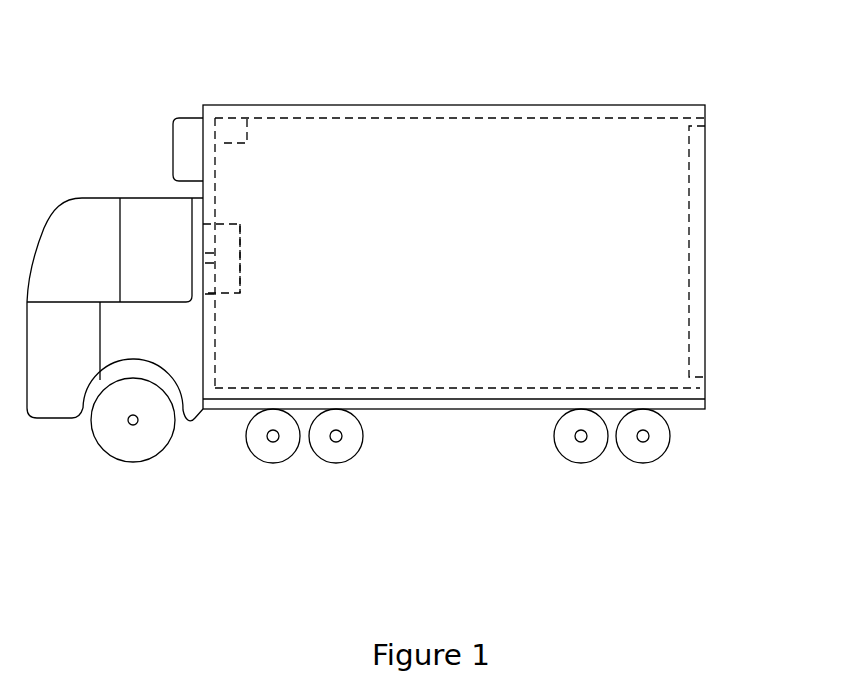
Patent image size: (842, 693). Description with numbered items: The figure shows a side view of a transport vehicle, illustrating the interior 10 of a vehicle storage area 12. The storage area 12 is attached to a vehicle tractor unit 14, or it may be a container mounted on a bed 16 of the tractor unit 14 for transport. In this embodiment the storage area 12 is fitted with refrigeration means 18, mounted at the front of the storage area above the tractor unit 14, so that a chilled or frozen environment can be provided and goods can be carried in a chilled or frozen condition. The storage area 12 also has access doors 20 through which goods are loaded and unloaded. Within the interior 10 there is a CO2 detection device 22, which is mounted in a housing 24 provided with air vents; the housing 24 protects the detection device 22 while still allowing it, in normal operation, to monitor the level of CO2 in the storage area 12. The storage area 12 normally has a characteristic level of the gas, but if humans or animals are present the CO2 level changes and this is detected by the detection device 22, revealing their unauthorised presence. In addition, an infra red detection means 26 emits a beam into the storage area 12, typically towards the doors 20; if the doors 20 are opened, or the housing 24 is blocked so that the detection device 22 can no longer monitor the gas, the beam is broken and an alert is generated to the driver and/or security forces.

The interior 10 is at (411, 260).
The vehicle storage area 12 is at (705, 260).
The vehicle tractor unit 14 is at (87, 233).
The bed 16 is at (487, 412).
The refrigeration means 18 is at (190, 130).
The access doors 20 is at (693, 204).
The CO2 detection device 22 is at (210, 243).
The housing 24 is at (240, 232).
The infra red detection means 26 is at (212, 272).